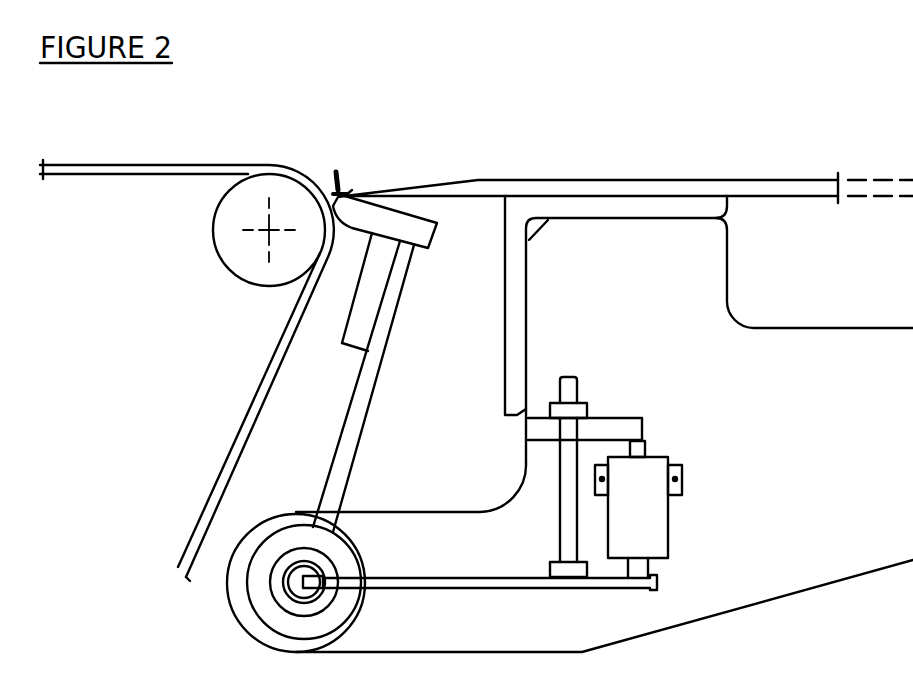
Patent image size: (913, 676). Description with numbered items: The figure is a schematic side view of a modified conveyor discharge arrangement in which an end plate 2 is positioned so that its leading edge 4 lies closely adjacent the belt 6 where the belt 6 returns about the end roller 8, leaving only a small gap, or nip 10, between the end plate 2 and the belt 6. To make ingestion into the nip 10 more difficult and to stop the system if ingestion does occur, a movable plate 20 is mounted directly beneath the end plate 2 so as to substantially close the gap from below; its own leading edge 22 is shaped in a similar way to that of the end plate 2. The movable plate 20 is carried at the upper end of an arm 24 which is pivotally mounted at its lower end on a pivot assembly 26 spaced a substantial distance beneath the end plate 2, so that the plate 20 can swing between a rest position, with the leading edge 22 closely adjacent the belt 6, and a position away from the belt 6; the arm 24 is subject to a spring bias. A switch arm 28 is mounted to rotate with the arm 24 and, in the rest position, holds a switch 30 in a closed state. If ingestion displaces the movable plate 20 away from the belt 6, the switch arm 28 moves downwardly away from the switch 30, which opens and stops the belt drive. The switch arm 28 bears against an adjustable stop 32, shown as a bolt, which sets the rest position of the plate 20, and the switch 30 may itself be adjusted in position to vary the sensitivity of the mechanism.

The end plate 2 is at (561, 180).
The leading edge 4 is at (350, 190).
The belt 6 is at (113, 165).
The end roller 8 is at (237, 256).
The nip 10 is at (337, 186).
The movable plate 20 is at (437, 242).
The leading edge 22 is at (331, 191).
The arm 24 is at (380, 340).
The pivot assembly 26 is at (300, 584).
The switch arm 28 is at (432, 589).
The switch 30 is at (647, 477).
The adjustable stop 32 is at (570, 568).